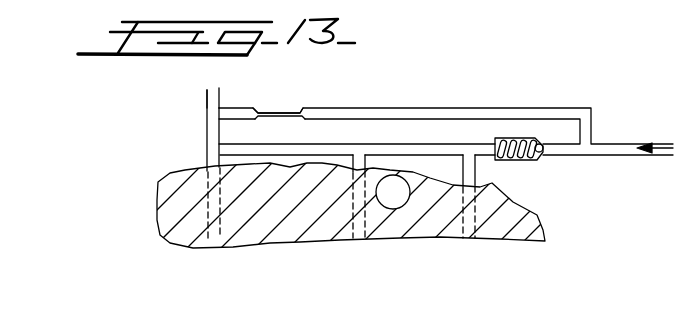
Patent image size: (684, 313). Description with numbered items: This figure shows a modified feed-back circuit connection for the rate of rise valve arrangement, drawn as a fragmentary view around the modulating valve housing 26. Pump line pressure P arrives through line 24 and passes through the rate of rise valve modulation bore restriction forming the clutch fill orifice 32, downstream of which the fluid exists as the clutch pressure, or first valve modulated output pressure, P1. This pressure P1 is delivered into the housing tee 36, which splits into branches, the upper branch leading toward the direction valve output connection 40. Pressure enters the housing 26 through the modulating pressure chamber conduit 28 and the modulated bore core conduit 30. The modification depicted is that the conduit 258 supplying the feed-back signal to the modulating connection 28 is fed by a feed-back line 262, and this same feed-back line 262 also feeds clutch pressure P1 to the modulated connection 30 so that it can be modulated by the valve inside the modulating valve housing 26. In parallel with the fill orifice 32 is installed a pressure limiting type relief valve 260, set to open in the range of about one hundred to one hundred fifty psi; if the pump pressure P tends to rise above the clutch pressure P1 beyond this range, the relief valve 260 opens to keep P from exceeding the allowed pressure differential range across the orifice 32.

The line 24 is at (637, 158).
The rate of rise valve assembly housing 26 is at (526, 228).
The modulating pressure chamber conduit 28 is at (477, 172).
The modulated bore core conduit 30 is at (368, 169).
The clutch fill orifice 32 is at (277, 108).
The housing tee 36 is at (207, 119).
The direction valve output connection 40 is at (207, 93).
The conduit 258 is at (362, 144).
The pressure limiting type relief valve 260 is at (543, 160).
The feed-back line 262 is at (243, 143).
The pump line pressure P is at (523, 107).
The clutch pressure P1 is at (213, 91).